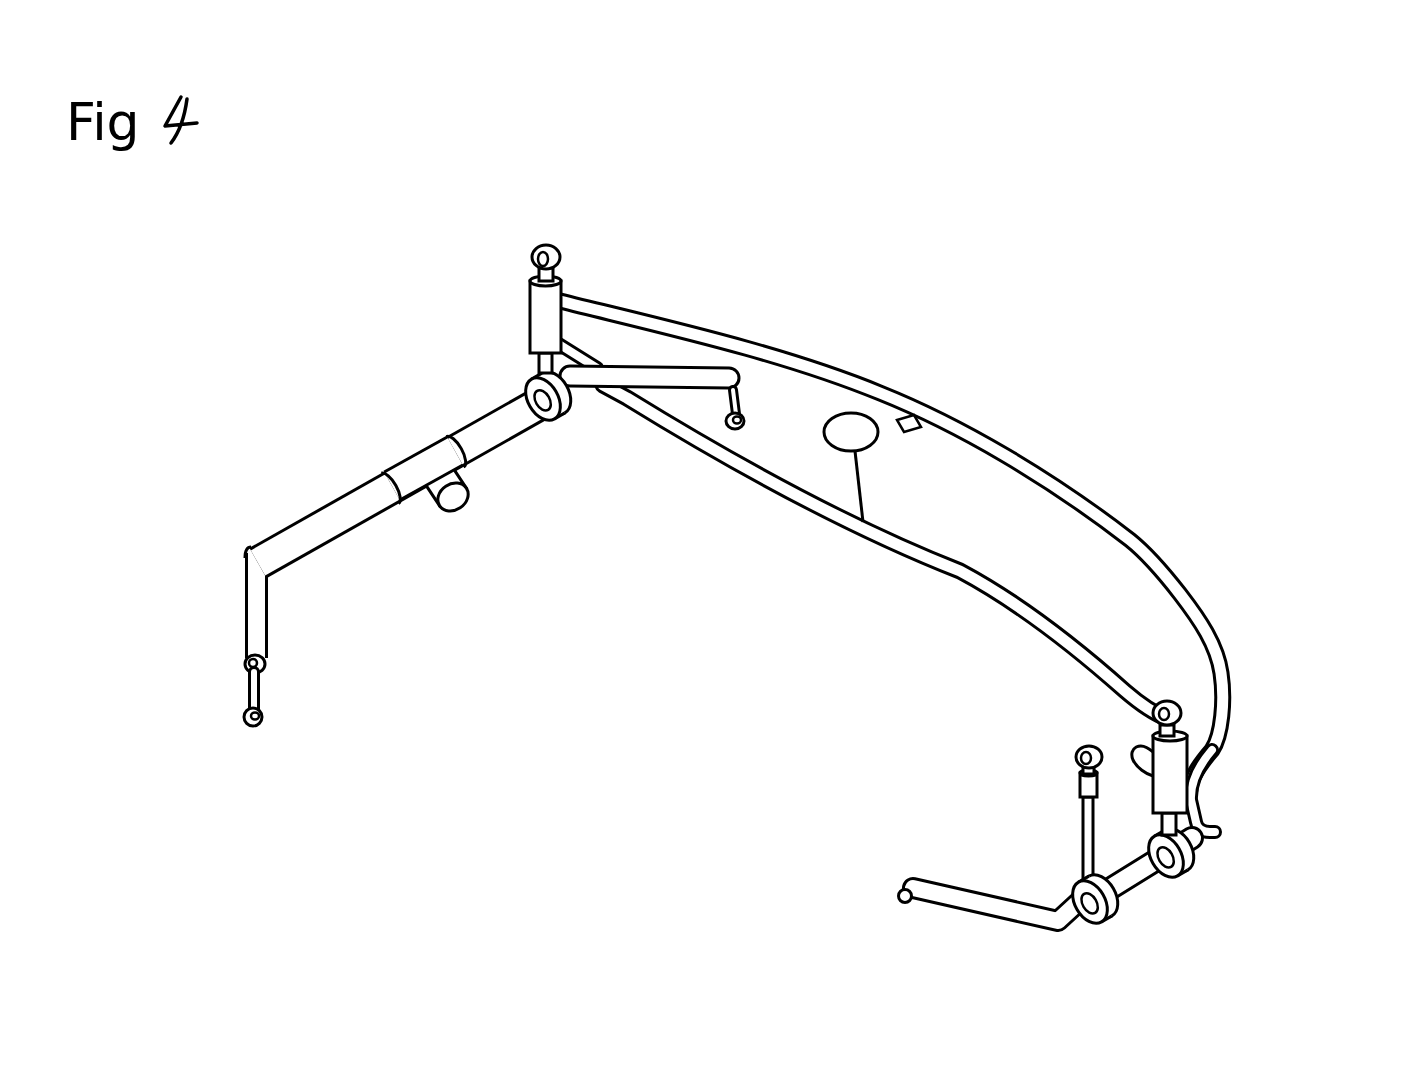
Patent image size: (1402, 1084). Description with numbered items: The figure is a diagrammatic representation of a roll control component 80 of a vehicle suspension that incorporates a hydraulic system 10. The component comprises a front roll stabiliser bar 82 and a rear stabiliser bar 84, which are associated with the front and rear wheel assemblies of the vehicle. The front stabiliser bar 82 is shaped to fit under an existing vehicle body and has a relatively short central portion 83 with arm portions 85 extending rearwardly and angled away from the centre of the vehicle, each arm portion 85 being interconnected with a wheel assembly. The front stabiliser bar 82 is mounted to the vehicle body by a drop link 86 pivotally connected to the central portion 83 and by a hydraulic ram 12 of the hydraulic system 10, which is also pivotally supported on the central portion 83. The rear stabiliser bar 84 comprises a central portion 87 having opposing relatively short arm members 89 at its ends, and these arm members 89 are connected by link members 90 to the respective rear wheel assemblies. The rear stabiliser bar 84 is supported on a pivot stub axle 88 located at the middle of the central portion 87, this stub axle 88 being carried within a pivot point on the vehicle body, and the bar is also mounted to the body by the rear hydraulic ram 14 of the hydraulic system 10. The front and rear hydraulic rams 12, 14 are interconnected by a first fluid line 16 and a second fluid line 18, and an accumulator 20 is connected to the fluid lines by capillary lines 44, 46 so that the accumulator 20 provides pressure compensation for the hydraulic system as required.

The hydraulic system 10 is at (915, 545).
The hydraulic ram 12 is at (1197, 757).
The rear hydraulic ram 14 is at (530, 312).
The first fluid line 16 is at (1063, 480).
The second fluid line 18 is at (950, 580).
The accumulator 20 is at (862, 473).
The capillary line 44 is at (877, 427).
The capillary line 46 is at (855, 533).
The roll control component 80 is at (876, 298).
The front roll stabiliser bar 82 is at (1252, 814).
The central portion 83 is at (1127, 880).
The rear stabiliser bar 84 is at (389, 406).
The arm portions 85 is at (1200, 808).
The drop link 86 is at (1086, 836).
The central portion 87 is at (355, 500).
The pivot stub axle 88 is at (460, 502).
The arm members 89 is at (270, 618).
The link members 90 is at (741, 395).